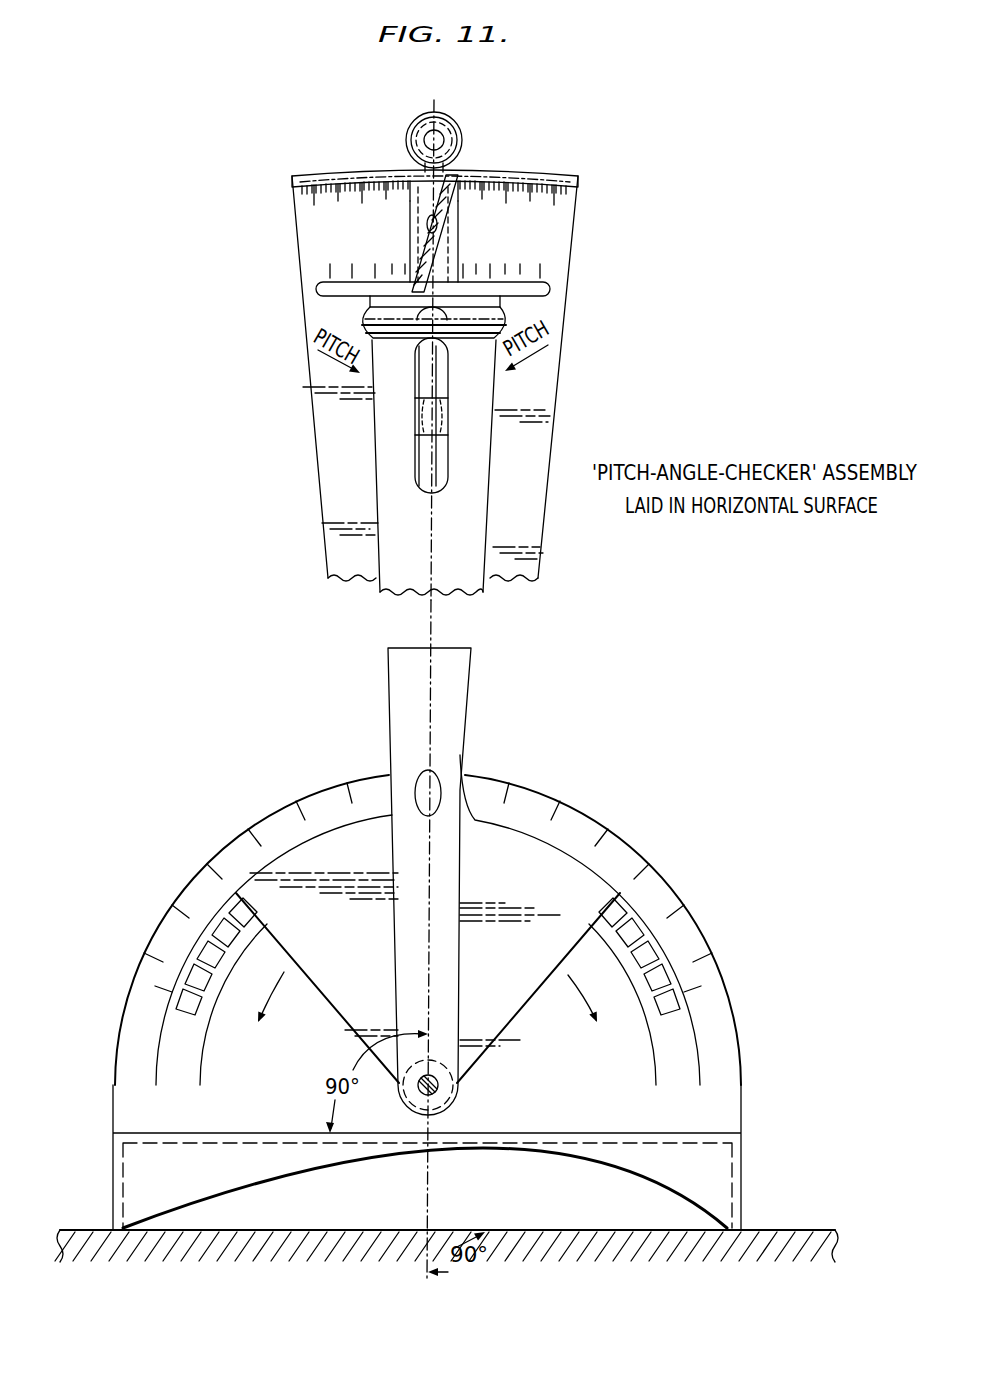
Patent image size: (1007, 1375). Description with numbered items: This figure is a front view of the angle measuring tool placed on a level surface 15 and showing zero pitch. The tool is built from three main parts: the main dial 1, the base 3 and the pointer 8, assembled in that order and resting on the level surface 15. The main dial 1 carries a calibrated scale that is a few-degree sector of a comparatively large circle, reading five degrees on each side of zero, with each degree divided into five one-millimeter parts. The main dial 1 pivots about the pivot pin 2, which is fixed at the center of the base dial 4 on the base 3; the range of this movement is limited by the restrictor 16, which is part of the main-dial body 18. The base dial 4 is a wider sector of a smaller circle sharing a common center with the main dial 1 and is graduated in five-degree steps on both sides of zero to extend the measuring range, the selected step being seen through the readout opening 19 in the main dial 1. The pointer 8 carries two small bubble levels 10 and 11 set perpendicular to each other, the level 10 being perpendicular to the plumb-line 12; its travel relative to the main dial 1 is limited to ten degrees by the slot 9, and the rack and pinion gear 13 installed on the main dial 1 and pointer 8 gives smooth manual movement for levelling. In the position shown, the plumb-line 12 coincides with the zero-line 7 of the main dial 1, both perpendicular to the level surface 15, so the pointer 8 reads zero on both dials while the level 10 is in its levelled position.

The main dial 1 is at (282, 195).
The pivot pin 2 is at (440, 1093).
The base 3 is at (743, 1197).
The base dial 4 is at (258, 833).
The zero-line 7 is at (434, 600).
The pointer 8 is at (407, 657).
The slot 9 is at (588, 363).
The level 10 is at (378, 317).
The level 11 is at (441, 465).
The plumb-line 12 is at (553, 939).
The rack and pinion gear 13 is at (470, 152).
The level surface 15 is at (311, 1224).
The restrictor 16 is at (519, 1004).
The main-dial body 18 is at (318, 487).
The readout opening 19 is at (426, 772).